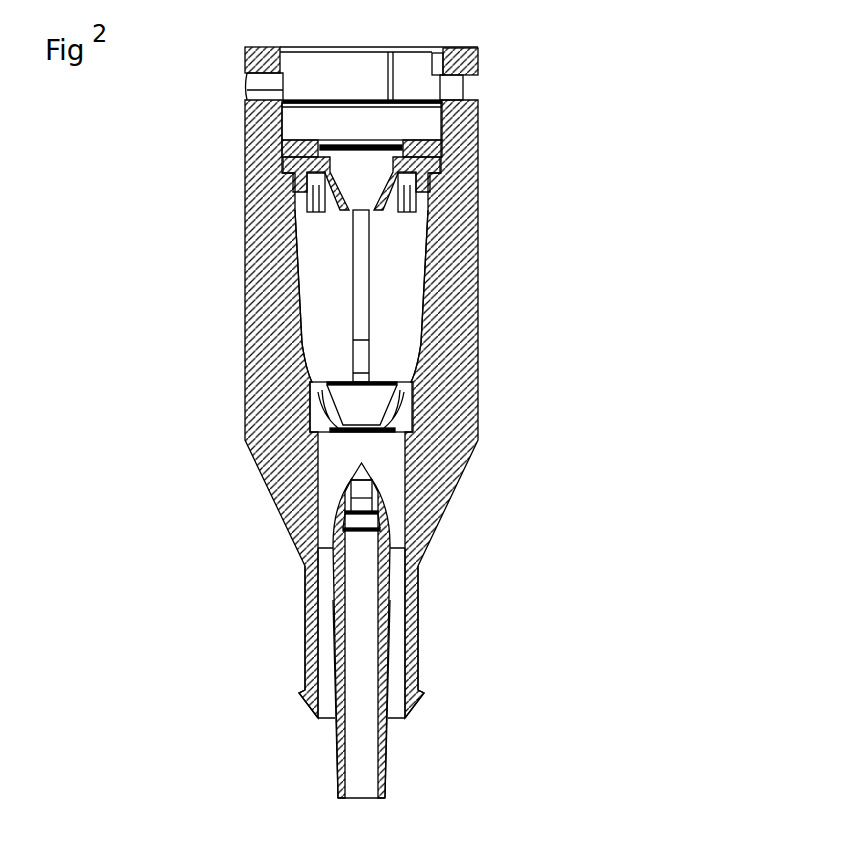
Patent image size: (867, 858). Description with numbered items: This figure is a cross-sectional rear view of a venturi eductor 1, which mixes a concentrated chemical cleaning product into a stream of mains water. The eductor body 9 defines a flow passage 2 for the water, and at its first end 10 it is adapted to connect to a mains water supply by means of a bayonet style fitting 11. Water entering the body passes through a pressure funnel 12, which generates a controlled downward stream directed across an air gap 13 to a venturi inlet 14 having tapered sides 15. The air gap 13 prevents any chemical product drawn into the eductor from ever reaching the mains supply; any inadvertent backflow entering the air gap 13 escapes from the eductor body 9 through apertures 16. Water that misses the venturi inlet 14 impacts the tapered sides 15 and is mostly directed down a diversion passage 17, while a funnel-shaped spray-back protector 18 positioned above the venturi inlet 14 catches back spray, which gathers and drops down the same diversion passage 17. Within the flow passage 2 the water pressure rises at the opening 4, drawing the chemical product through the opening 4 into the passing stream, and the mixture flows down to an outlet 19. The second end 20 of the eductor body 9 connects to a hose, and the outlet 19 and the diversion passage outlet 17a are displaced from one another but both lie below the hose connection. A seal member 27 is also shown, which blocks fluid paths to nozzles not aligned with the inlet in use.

The venturi eductor 1 is at (155, 132).
The flow passage 2 is at (376, 499).
The opening 4 is at (380, 521).
The eductor body 9 is at (247, 278).
The first end 10 is at (250, 47).
The bayonet style fitting 11 is at (463, 87).
The pressure funnel 12 is at (293, 190).
The air gap 13 is at (343, 282).
The venturi inlet 14 is at (347, 482).
The tapered sides 15 is at (358, 466).
The apertures 16 is at (320, 308).
The diversion passage 17 is at (318, 584).
The outlet of the diversion passage 17a is at (318, 725).
The spray-back protector 18 is at (337, 403).
The outlet 19 is at (338, 793).
The second end 20 is at (305, 675).
The seal member 27 is at (300, 703).